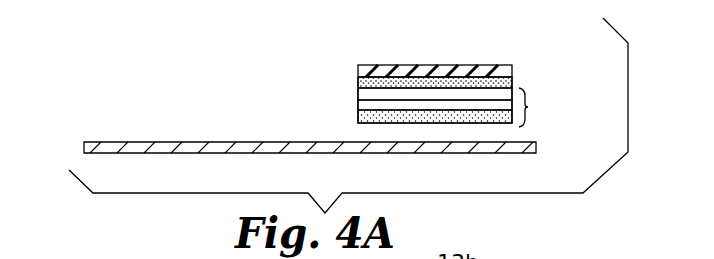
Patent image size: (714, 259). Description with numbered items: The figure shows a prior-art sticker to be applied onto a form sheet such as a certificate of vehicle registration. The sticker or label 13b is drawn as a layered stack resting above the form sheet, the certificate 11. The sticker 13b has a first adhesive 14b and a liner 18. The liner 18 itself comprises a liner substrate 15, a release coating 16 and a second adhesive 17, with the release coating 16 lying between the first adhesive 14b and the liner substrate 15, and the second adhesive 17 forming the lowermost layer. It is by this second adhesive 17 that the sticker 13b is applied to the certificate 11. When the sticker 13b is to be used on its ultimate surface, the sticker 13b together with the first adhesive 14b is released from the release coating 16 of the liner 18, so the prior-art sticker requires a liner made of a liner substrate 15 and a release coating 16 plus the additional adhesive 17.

The certificate 11 is at (199, 147).
The sticker 13b is at (426, 66).
The first adhesive 14b is at (510, 82).
The liner substrate 15 is at (365, 105).
The release coating 16 is at (365, 92).
The second adhesive 17 is at (365, 116).
The liner 18 is at (539, 107).